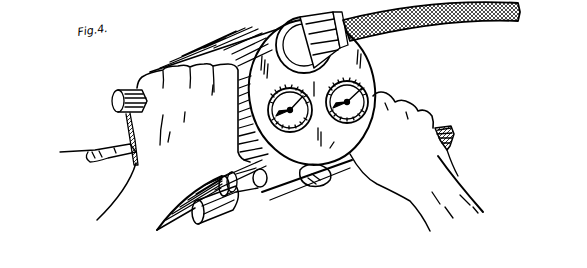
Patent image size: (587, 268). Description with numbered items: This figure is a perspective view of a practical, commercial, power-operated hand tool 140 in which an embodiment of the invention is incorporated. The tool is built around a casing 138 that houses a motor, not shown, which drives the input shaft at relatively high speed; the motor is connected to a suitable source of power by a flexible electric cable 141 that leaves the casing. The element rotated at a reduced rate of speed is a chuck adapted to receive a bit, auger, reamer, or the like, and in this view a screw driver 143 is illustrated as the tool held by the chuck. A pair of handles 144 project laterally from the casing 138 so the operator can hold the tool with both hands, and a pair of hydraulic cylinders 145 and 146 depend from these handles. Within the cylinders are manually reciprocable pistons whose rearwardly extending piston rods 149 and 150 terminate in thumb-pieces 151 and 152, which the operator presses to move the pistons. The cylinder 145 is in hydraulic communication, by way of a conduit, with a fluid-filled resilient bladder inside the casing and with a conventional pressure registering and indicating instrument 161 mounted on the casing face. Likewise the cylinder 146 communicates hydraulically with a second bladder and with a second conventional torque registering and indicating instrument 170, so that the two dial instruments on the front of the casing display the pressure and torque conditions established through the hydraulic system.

The casing 138 is at (258, 56).
The power-operated hand tool 140 is at (384, 80).
The flexible electric cable 141 is at (518, 12).
The screw driver 143 is at (86, 152).
The handles 144 is at (114, 99).
The hydraulic cylinder 145 is at (194, 195).
The hydraulic cylinder 146 is at (242, 208).
The piston rod 149 is at (232, 174).
The piston rod 150 is at (290, 194).
The thumb-piece 151 is at (322, 148).
The thumb-piece 152 is at (324, 182).
The pressure registering and indicating instrument 161 is at (288, 110).
The torque registering and indicating instrument 170 is at (387, 78).